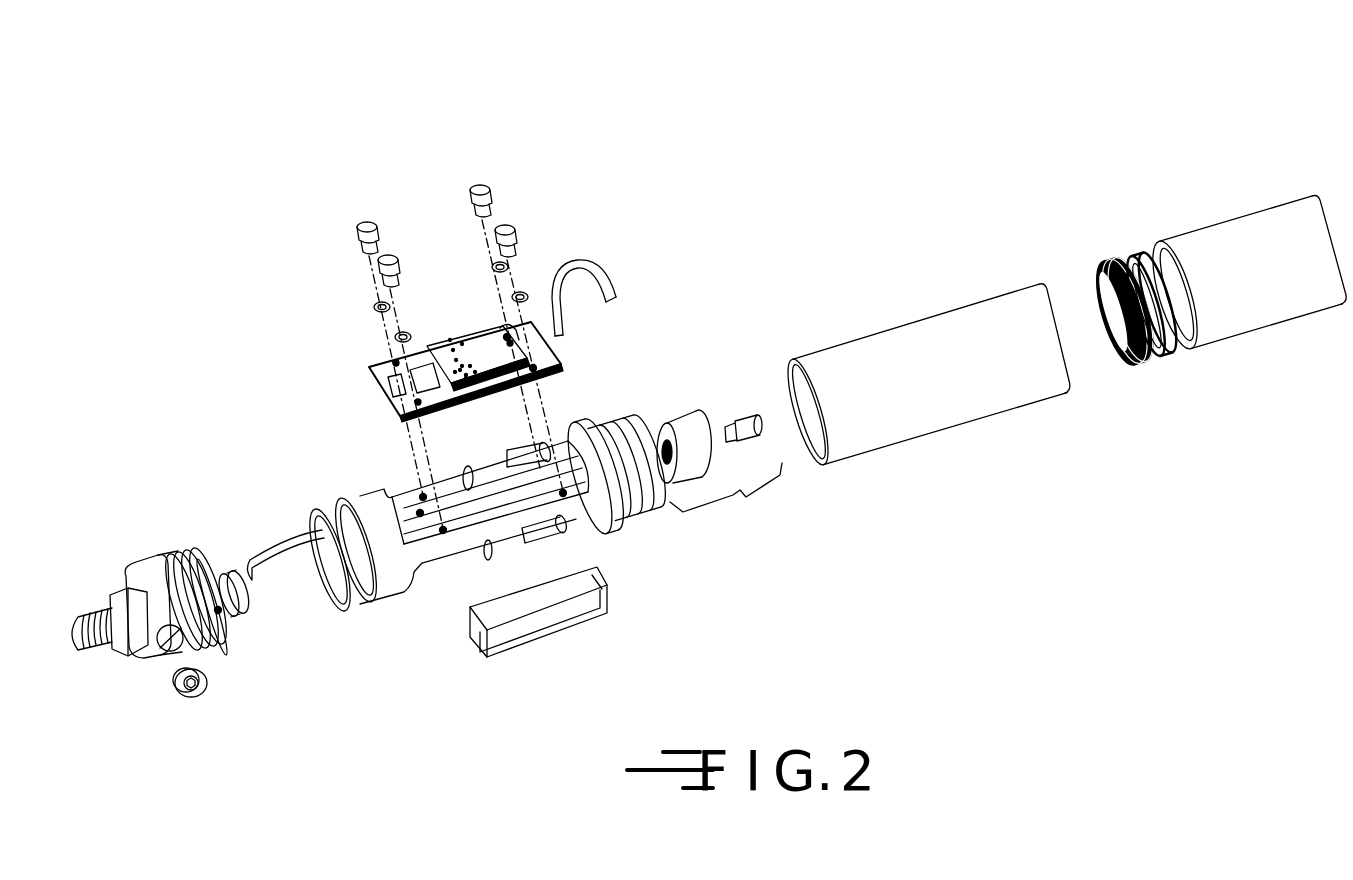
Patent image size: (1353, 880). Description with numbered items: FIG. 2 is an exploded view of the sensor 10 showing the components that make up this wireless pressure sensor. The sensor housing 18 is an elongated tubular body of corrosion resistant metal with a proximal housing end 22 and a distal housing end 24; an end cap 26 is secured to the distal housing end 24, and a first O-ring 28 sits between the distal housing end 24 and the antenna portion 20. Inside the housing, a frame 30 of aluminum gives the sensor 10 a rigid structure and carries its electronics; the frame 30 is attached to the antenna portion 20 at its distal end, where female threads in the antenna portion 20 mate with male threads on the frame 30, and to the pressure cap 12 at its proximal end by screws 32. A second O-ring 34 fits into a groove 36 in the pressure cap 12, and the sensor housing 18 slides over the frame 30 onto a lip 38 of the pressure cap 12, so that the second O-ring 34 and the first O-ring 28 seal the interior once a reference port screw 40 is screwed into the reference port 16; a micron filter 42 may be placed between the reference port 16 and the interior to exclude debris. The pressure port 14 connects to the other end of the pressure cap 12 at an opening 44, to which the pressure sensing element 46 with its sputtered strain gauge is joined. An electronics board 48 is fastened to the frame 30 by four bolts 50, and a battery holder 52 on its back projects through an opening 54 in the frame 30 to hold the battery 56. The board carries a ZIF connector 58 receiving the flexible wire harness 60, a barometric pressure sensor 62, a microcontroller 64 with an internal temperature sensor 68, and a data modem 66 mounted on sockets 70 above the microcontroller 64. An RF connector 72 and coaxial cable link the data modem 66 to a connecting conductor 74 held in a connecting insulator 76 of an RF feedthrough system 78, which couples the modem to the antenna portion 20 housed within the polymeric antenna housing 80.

The sensor 10 is at (737, 218).
The pressure cap 12 is at (162, 615).
The pressure port 14 is at (78, 637).
The reference port 16 is at (172, 647).
The sensor housing 18 is at (928, 397).
The antenna portion 20 is at (1247, 278).
The proximal housing end 22 is at (822, 378).
The distal housing end 24 is at (1022, 375).
The end cap 26 is at (1110, 258).
The first O-ring 28 is at (1163, 360).
The frame 30 is at (501, 494).
The screws 32 is at (520, 452).
The second O-ring 34 is at (342, 600).
The groove 36 is at (204, 652).
The lip 38 is at (172, 562).
The reference port screw 40 is at (196, 692).
The micron filter 42 is at (220, 615).
The opening 44 is at (212, 598).
The pressure sensing element 46 is at (254, 600).
The electronics board 48 is at (465, 324).
The bolts 50 is at (357, 227).
The battery holder 52 is at (561, 619).
The opening 54 is at (405, 490).
The battery 56 is at (547, 620).
The Zero Insertion Force connector 58 is at (388, 393).
The flexible wire harness 60 is at (598, 281).
The barometric pressure sensor 62 is at (418, 370).
The microcontroller 64 is at (450, 334).
The data modem 66 is at (490, 333).
The internal temperature sensor 68 is at (457, 371).
The sockets 70 is at (537, 385).
The RF connector 72 is at (507, 334).
The connecting conductor 74 is at (731, 417).
The connecting insulator 76 is at (670, 412).
The RF feedthrough system 78 is at (712, 440).
The antenna housing 80 is at (1258, 305).